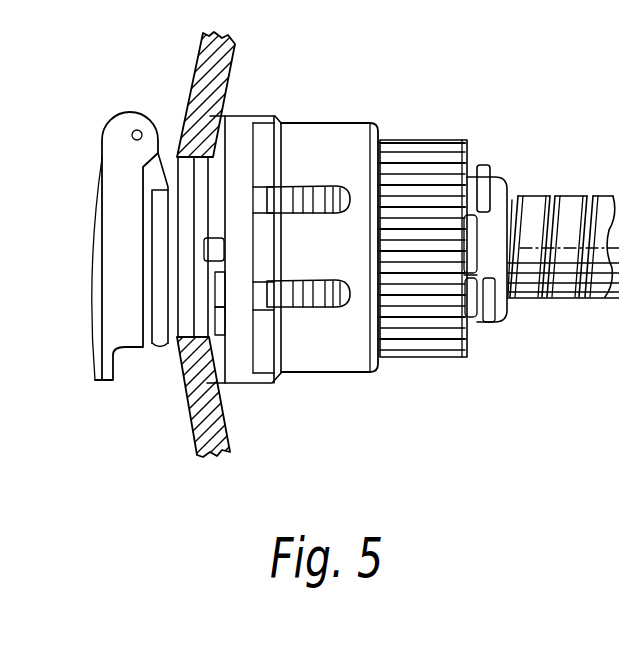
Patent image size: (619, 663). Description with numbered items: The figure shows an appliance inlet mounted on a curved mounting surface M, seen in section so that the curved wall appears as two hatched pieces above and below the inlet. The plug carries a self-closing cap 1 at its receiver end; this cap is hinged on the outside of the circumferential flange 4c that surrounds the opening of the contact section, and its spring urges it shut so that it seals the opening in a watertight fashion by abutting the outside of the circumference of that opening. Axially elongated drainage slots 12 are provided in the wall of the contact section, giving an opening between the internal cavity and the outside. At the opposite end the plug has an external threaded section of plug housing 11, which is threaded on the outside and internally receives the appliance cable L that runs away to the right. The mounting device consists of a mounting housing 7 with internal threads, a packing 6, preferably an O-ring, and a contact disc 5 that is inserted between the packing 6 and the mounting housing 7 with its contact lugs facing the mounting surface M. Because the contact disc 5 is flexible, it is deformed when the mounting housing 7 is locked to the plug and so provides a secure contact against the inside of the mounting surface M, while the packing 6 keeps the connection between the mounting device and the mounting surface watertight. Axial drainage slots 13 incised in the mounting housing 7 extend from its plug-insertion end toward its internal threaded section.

The self-closing cap 1 is at (110, 267).
The circumferential flange 4c is at (150, 355).
The contact disc 5 is at (238, 374).
The packing 6 is at (219, 144).
The mounting housing 7 is at (348, 357).
The external threaded section of plug housing 11 is at (487, 165).
The drainage slots 12 is at (207, 250).
The axial drainage slots 13 is at (285, 300).
The curved mounting surface M is at (200, 77).
The appliance cable L is at (572, 200).